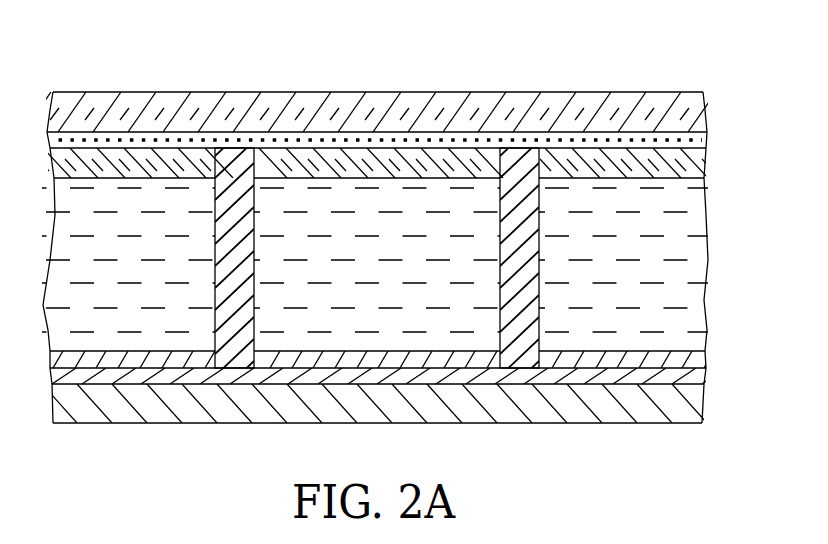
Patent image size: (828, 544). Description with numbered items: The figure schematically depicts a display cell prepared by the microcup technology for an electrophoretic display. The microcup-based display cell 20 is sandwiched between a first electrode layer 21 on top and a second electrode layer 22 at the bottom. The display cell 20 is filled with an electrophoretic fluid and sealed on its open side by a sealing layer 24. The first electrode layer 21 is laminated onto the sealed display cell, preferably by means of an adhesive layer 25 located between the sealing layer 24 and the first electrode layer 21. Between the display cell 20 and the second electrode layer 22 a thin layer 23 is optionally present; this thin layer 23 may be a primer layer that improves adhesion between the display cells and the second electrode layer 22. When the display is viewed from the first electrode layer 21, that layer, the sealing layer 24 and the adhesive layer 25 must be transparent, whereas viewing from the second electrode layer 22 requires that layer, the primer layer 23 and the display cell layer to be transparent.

The display cell 20 is at (378, 228).
The first electrode layer 21 is at (510, 97).
The second electrode layer 22 is at (550, 405).
The thin layer 23 is at (225, 370).
The sealing layer 24 is at (355, 152).
The adhesive layer 25 is at (161, 141).